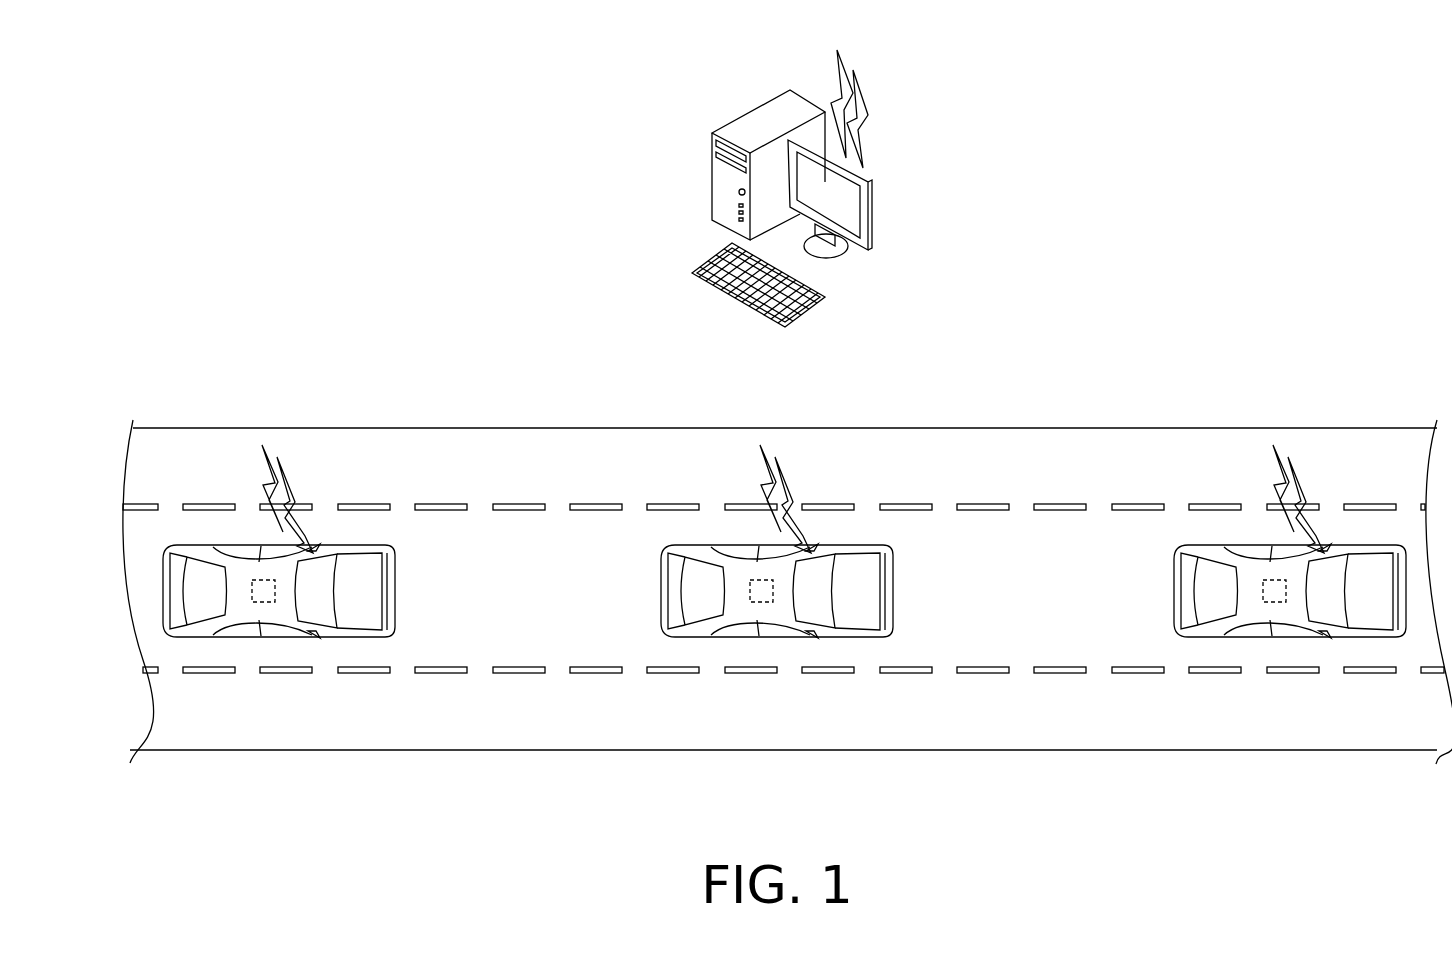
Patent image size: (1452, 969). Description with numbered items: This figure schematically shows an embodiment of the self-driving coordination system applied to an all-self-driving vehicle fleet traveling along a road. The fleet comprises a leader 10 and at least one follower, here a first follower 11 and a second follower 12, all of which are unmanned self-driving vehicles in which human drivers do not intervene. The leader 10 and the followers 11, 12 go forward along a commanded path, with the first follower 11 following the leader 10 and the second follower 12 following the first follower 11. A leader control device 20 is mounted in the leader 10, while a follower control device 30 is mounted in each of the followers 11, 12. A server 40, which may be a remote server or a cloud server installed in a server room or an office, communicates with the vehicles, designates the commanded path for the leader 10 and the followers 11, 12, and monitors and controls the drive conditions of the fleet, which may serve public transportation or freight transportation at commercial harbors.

The leader 10 is at (1349, 480).
The first follower 11 is at (829, 480).
The second follower 12 is at (344, 480).
The leader control device 20 is at (1284, 597).
The follower control device 30 is at (270, 597).
The server 40 is at (893, 95).